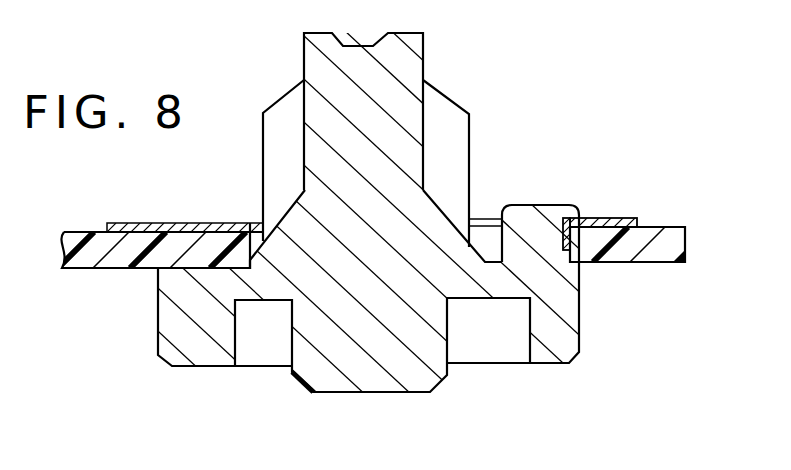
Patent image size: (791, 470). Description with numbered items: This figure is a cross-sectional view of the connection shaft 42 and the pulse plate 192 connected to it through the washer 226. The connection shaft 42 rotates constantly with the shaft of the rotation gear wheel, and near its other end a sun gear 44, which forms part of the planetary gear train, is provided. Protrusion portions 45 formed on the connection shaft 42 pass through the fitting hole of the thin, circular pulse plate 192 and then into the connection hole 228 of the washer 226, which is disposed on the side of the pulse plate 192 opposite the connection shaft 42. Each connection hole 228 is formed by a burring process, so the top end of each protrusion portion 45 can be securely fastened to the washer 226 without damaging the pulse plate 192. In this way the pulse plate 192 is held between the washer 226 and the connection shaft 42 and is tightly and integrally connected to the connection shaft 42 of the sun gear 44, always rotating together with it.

The connection shaft 42 is at (580, 315).
The sun gear 44 is at (470, 126).
The protrusion portions 45 is at (518, 220).
The pulse plate 192 is at (668, 226).
The washer 226 is at (615, 218).
The connection hole 228 is at (563, 227).